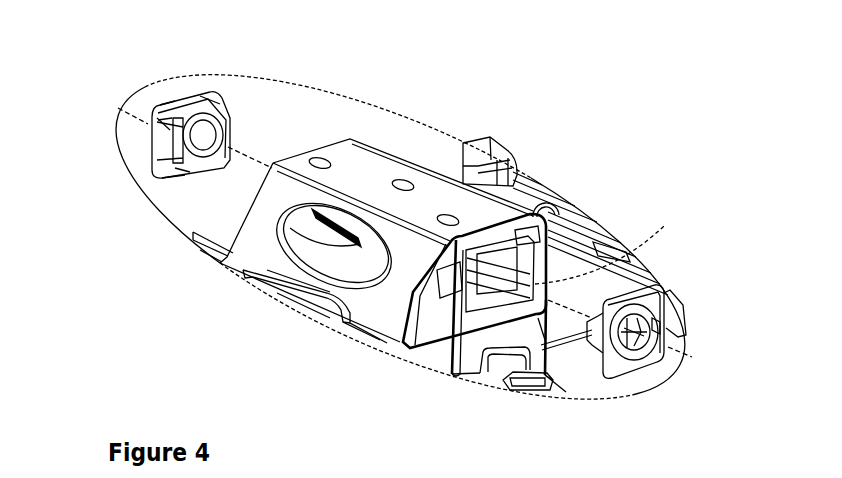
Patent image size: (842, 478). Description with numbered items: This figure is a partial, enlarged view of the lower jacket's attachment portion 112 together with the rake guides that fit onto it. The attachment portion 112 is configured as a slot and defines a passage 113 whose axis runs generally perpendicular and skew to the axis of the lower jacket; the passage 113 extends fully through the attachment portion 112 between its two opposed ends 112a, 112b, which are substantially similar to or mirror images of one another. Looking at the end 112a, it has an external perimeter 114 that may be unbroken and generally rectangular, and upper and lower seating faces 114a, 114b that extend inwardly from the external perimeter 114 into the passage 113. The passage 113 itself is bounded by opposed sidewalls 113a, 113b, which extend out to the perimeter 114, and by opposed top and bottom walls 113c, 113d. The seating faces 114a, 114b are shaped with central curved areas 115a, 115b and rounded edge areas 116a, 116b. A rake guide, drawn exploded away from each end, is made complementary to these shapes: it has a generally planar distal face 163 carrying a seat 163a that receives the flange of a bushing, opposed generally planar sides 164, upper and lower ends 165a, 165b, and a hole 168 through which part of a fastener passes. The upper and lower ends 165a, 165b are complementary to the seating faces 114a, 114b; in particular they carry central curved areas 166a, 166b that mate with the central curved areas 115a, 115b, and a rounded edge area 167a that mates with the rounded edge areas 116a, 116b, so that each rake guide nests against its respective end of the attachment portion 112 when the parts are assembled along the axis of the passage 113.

The attachment portion 112 is at (429, 160).
The end 112a is at (478, 232).
The end 112b is at (334, 137).
The passage 113 is at (545, 330).
The sidewall 113a is at (548, 262).
The sidewall 113b is at (490, 296).
The top wall 113c is at (556, 252).
The bottom wall 113d is at (522, 318).
The external perimeter 114 is at (548, 287).
The upper seating face 114a is at (532, 215).
The lower seating face 114b is at (483, 310).
The central curved area 115a is at (495, 216).
The central curved area 115b is at (455, 305).
The rounded edge area 116a is at (526, 238).
The rounded edge area 116b is at (552, 338).
The distal face 163 is at (653, 303).
The seat 163a is at (660, 324).
The side 164 is at (160, 150).
The upper end 165a is at (182, 90).
The lower end 165b is at (163, 190).
The central curved area 166a is at (208, 106).
The central curved area 166b is at (182, 173).
The rounded edge area 167a is at (167, 122).
The hole 168 is at (657, 337).